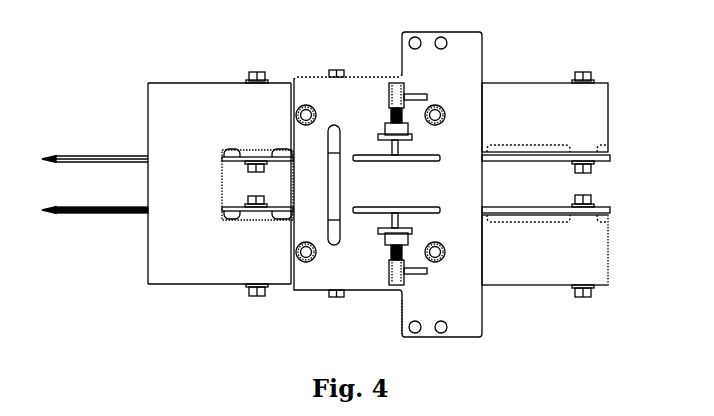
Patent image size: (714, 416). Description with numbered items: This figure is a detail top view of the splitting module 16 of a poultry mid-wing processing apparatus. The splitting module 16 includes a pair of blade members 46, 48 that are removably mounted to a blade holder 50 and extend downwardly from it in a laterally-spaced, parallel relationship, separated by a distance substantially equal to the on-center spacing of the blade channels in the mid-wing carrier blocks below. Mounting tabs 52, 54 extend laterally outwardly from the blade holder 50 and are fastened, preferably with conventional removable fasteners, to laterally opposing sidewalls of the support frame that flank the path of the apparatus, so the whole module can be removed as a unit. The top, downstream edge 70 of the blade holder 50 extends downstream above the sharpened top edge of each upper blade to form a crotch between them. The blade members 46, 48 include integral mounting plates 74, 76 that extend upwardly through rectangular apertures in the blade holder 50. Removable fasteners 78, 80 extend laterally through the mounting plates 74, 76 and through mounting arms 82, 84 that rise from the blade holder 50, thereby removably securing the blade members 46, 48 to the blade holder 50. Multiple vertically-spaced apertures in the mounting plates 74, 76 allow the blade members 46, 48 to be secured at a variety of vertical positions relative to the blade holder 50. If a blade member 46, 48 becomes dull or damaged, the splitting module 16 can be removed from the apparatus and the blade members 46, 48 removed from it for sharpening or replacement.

The splitting module 16 is at (161, 287).
The blade member 46 is at (87, 155).
The blade member 48 is at (83, 212).
The blade holder 50 is at (192, 265).
The mounting tab 52 is at (460, 55).
The mounting tab 54 is at (462, 325).
The top, downstream edge of the blade holder 70 is at (147, 118).
The mounting plate 74 is at (368, 155).
The mounting plate 76 is at (367, 212).
The removable fastener 78 is at (403, 90).
The removable fastener 80 is at (400, 270).
The mounting arm 82 is at (381, 138).
The mounting arm 84 is at (382, 232).